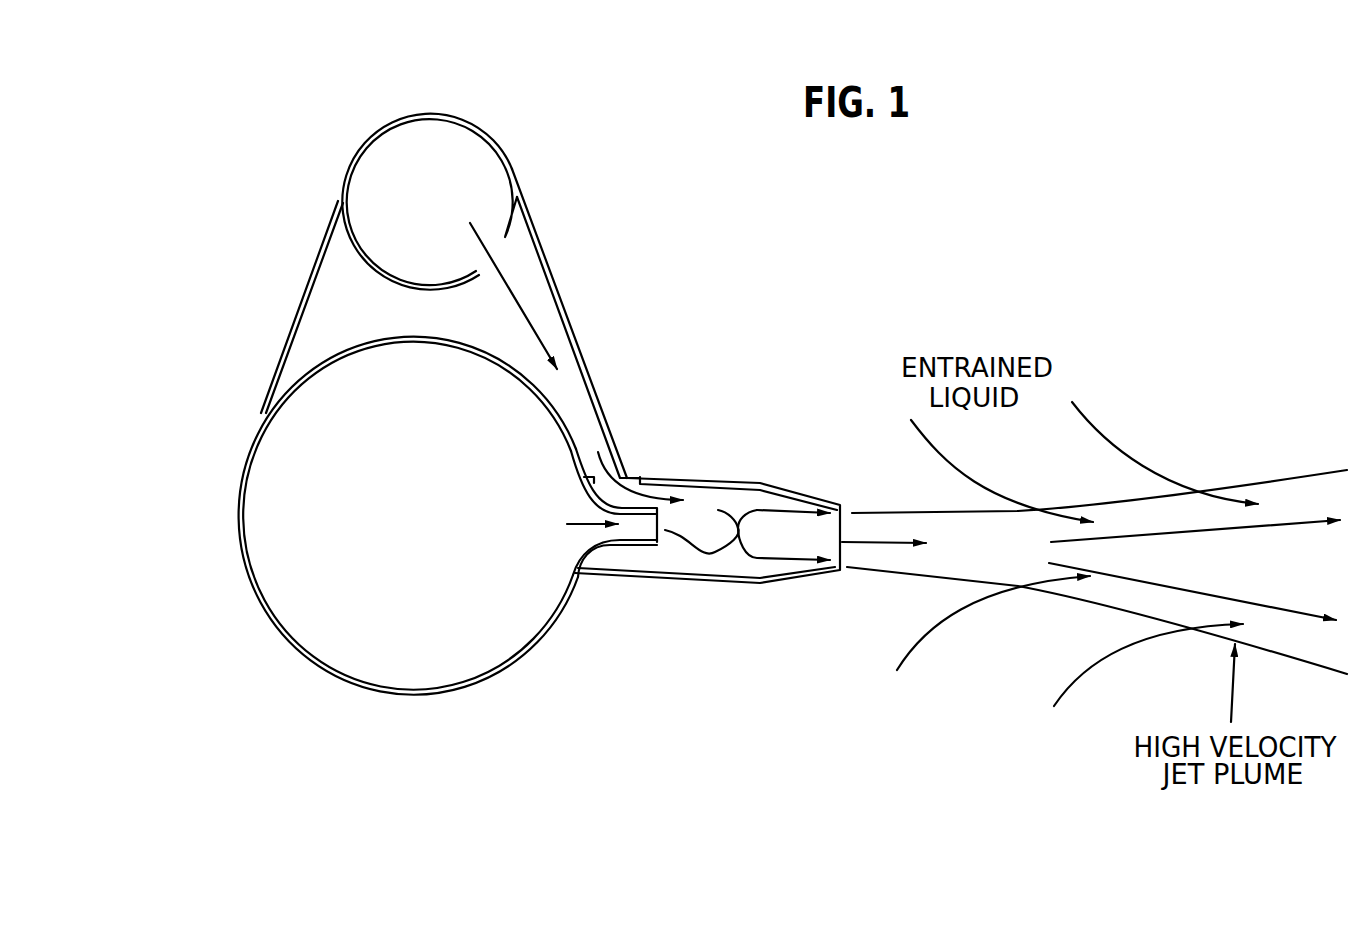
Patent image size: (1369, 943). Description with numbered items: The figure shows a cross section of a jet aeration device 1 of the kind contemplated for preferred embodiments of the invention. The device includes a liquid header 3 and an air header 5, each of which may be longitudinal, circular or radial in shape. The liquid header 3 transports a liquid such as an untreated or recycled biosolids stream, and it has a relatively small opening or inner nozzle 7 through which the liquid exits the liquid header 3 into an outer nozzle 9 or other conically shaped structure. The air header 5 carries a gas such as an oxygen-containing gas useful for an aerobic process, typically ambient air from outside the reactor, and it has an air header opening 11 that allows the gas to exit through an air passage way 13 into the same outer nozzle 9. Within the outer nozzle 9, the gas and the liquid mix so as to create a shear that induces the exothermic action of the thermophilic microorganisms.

The jet aeration device 1 is at (400, 722).
The liquid header 3 is at (237, 497).
The air header 5 is at (432, 113).
The inner nozzle 7 is at (625, 547).
The outer nozzle 9 is at (793, 583).
The air header opening 11 is at (497, 260).
The air passage way 13 is at (577, 393).